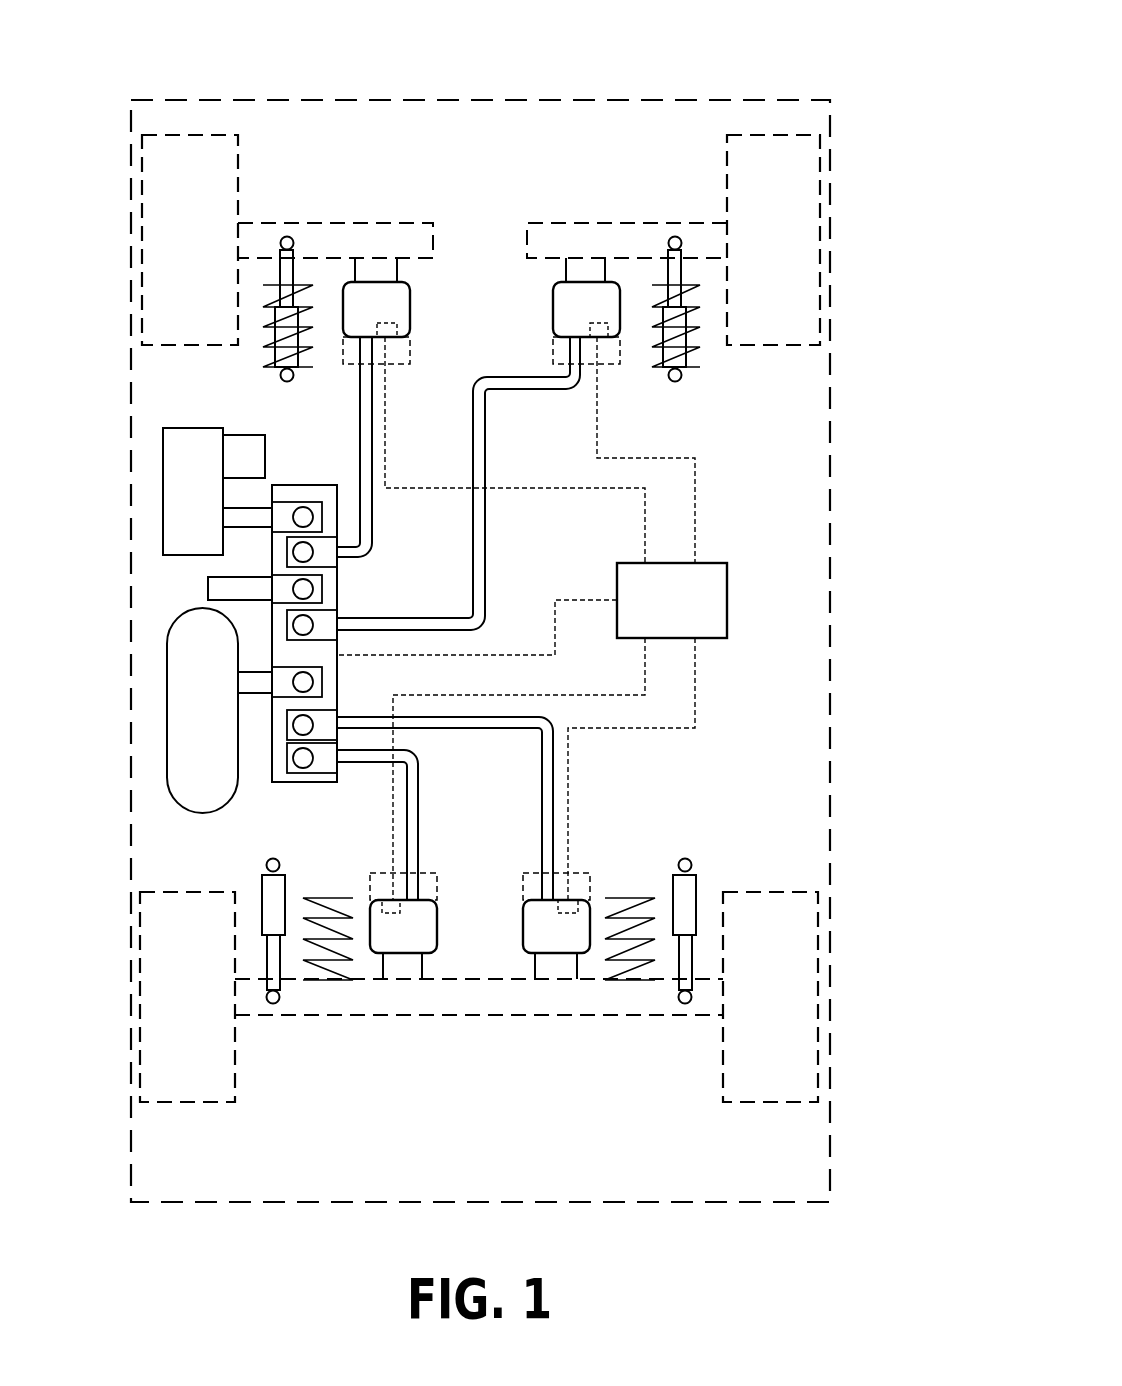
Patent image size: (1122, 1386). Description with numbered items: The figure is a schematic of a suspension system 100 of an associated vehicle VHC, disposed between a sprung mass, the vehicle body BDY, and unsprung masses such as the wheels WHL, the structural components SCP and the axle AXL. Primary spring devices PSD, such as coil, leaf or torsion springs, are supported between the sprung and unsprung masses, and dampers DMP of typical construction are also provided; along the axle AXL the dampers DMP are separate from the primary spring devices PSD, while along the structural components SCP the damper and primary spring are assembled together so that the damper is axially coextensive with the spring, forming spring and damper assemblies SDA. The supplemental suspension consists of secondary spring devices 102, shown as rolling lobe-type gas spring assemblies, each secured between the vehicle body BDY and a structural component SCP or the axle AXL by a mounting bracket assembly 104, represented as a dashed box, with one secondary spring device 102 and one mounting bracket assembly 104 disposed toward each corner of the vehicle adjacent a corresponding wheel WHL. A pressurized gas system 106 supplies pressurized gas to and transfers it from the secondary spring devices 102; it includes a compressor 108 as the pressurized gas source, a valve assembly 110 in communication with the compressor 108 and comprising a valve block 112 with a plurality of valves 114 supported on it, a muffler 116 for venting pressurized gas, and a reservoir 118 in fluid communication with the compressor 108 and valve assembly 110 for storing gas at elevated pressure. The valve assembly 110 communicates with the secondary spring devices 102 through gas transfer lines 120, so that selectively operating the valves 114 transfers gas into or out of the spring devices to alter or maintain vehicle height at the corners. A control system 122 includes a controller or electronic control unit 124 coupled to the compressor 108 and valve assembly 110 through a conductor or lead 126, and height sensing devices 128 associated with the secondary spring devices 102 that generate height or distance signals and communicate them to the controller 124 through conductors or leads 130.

The suspension system 100 is at (825, 450).
The secondary spring device 102 is at (434, 278).
The mounting bracket assembly 104 is at (410, 350).
The pressurized gas system 106 is at (122, 567).
The compressor 108 is at (185, 478).
The valve assembly 110 is at (303, 470).
The valve block 112 is at (303, 785).
The valves 114 is at (305, 627).
The muffler 116 is at (208, 586).
The reservoir 118 is at (185, 712).
The gas transfer lines 120 is at (372, 510).
The control system 122 is at (728, 525).
The controller or electronic control unit (ECU) 124 is at (692, 617).
The conductor or lead 126 is at (510, 648).
The height sensing device 128 is at (399, 328).
The conductors or leads 130 is at (597, 425).
The wheel WHL is at (175, 206).
The damper DMP is at (298, 272).
The primary spring device PSD is at (262, 338).
The spring and damper assembly SDA is at (257, 391).
The structural component SCP is at (363, 235).
The axle AXL is at (493, 1005).
The vehicle body BDY is at (697, 100).
The vehicle VHC is at (802, 64).